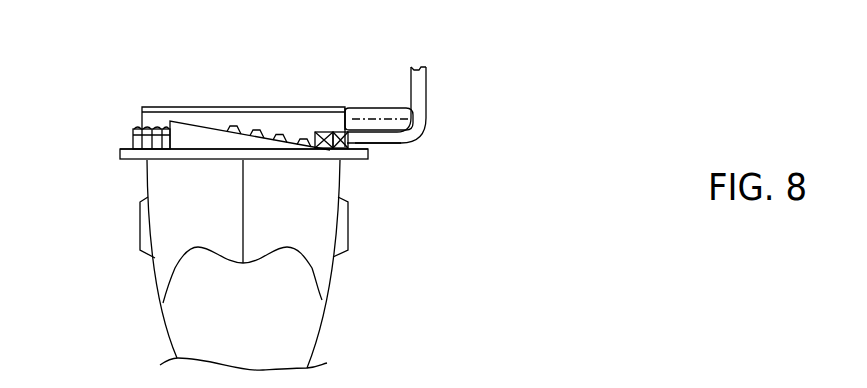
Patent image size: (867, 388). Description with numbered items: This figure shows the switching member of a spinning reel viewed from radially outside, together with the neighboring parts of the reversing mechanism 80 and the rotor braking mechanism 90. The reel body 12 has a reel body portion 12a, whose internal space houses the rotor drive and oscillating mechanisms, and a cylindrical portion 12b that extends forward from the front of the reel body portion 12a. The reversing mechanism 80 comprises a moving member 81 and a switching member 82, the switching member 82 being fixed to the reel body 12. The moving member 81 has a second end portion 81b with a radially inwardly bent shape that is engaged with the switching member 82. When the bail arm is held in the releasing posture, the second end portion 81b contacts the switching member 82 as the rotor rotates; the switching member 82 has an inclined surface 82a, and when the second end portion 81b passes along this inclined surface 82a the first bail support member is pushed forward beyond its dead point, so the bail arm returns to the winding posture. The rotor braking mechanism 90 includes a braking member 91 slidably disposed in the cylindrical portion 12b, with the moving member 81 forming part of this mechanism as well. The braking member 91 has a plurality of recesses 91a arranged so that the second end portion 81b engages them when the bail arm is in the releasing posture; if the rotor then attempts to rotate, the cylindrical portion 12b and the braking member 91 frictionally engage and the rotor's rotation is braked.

The reel body 12 is at (333, 318).
The reel body portion 12a is at (317, 225).
The cylindrical portion 12b is at (175, 106).
The reversing mechanism 80 is at (167, 98).
The moving member 81 is at (433, 98).
The second end portion 81b is at (386, 144).
The switching member 82 is at (200, 119).
The inclined surface 82a is at (246, 127).
The rotor braking mechanism 90 is at (133, 124).
The braking member 91 is at (318, 104).
The recesses 91a is at (343, 108).